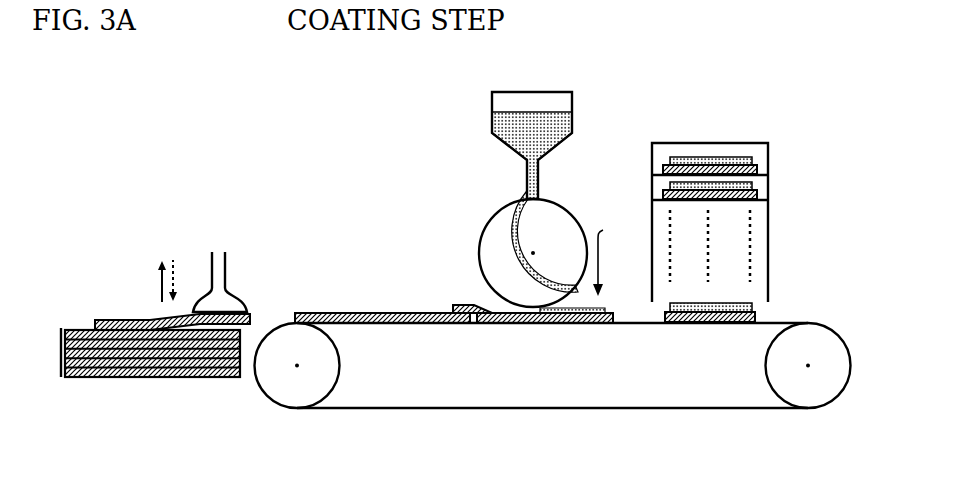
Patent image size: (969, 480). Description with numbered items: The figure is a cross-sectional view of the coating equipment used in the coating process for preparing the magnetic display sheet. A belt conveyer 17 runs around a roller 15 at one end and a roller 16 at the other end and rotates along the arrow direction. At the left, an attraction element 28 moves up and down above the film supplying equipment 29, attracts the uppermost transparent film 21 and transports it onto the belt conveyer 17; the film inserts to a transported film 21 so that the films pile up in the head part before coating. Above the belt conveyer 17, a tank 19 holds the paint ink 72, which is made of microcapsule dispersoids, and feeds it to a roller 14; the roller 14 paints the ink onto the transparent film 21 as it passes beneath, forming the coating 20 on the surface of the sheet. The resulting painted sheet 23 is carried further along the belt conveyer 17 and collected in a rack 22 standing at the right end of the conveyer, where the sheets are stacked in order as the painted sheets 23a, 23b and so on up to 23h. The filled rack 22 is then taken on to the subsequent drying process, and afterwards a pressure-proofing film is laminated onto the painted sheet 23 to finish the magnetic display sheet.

The roller 14 is at (545, 233).
The roller 15 is at (303, 393).
The roller 16 is at (817, 390).
The belt conveyer 17 is at (552, 408).
The tank 19 is at (492, 98).
The coating layer 20 is at (592, 323).
The transparent film 21 is at (102, 323).
The rack 22 is at (768, 182).
The painted sheet 23 is at (617, 258).
The painted sheet 23a is at (755, 165).
The painted sheet 23b is at (757, 195).
The painted sheet 23h is at (768, 318).
The attraction element 28 is at (225, 288).
The film supplying equipment 29 is at (62, 357).
The paint ink 72 is at (573, 123).